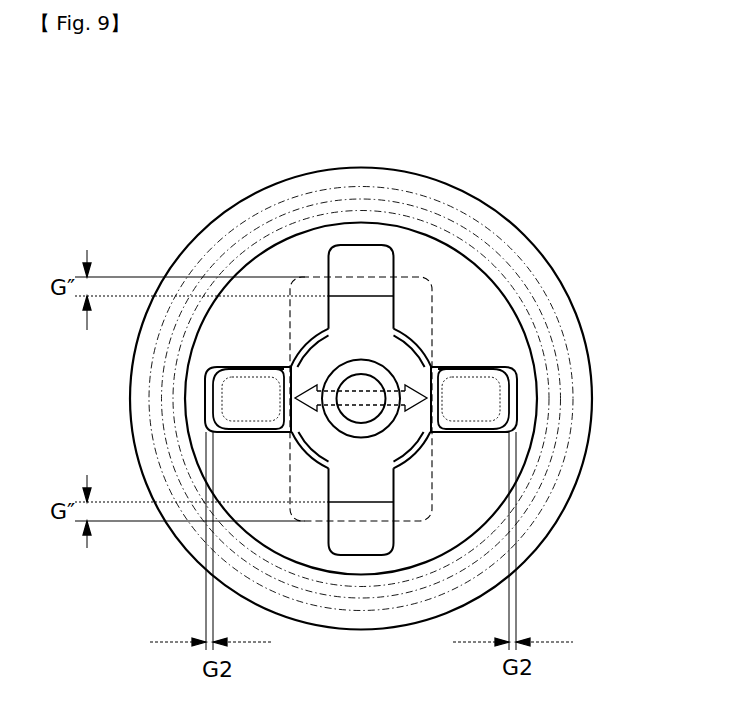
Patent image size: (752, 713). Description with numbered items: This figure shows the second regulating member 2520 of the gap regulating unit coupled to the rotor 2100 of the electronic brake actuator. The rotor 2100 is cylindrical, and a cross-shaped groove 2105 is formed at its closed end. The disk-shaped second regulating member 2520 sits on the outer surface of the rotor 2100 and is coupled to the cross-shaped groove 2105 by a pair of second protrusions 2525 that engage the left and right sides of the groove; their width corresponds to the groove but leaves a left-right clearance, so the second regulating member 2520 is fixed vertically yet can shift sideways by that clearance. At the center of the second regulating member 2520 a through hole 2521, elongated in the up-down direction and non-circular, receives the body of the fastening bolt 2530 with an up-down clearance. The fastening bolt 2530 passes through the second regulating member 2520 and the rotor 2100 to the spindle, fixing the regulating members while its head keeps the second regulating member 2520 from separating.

The rotor 2100 is at (487, 318).
The cross-shaped groove 2105 is at (370, 262).
The fastening bolt 2530 is at (383, 364).
The second regulating member 2520 is at (512, 377).
The second protrusion 2525 is at (486, 397).
The through hole 2521 is at (432, 488).